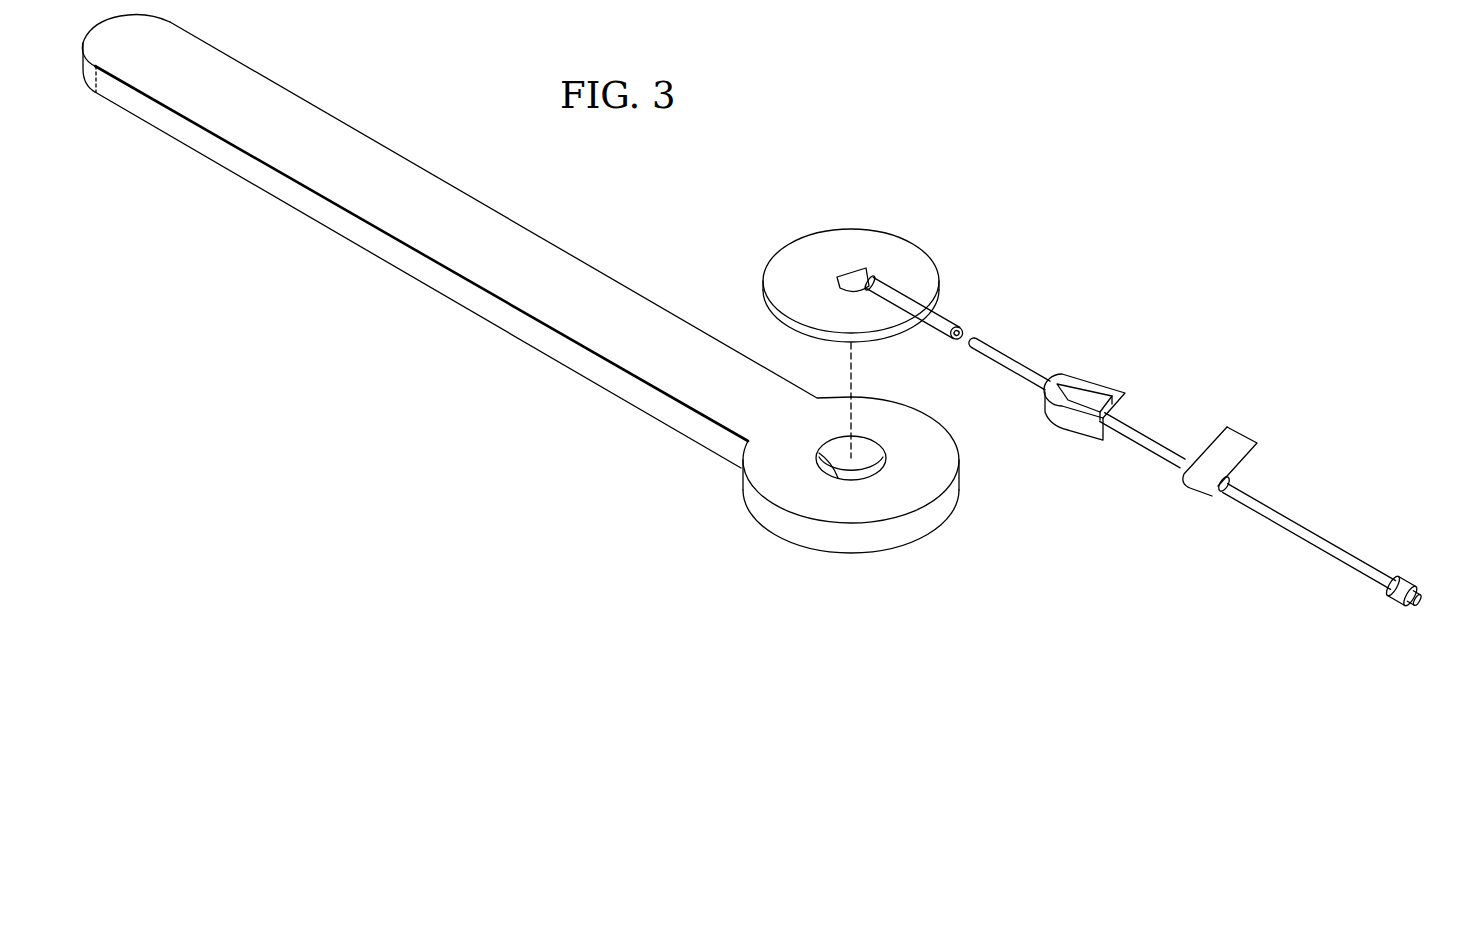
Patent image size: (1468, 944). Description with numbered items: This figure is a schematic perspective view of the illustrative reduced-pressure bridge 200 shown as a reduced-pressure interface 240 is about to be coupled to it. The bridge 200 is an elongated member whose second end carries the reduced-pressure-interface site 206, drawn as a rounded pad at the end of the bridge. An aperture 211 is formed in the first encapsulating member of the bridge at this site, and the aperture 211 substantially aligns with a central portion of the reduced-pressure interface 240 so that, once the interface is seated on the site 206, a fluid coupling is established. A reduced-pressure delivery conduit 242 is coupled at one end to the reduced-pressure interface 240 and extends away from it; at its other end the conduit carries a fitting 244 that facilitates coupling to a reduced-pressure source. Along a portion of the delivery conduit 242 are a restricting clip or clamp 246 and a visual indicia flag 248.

The reduced-pressure bridge 200 is at (353, 247).
The reduced-pressure-interface site 206 is at (905, 418).
The aperture 211 is at (820, 452).
The reduced-pressure interface 240 is at (877, 243).
The reduced-pressure delivery conduit 242 is at (994, 342).
The restricting clip or clamp 246 is at (1088, 380).
The visual indicia flag 248 is at (1237, 432).
The fitting 244 is at (1412, 578).